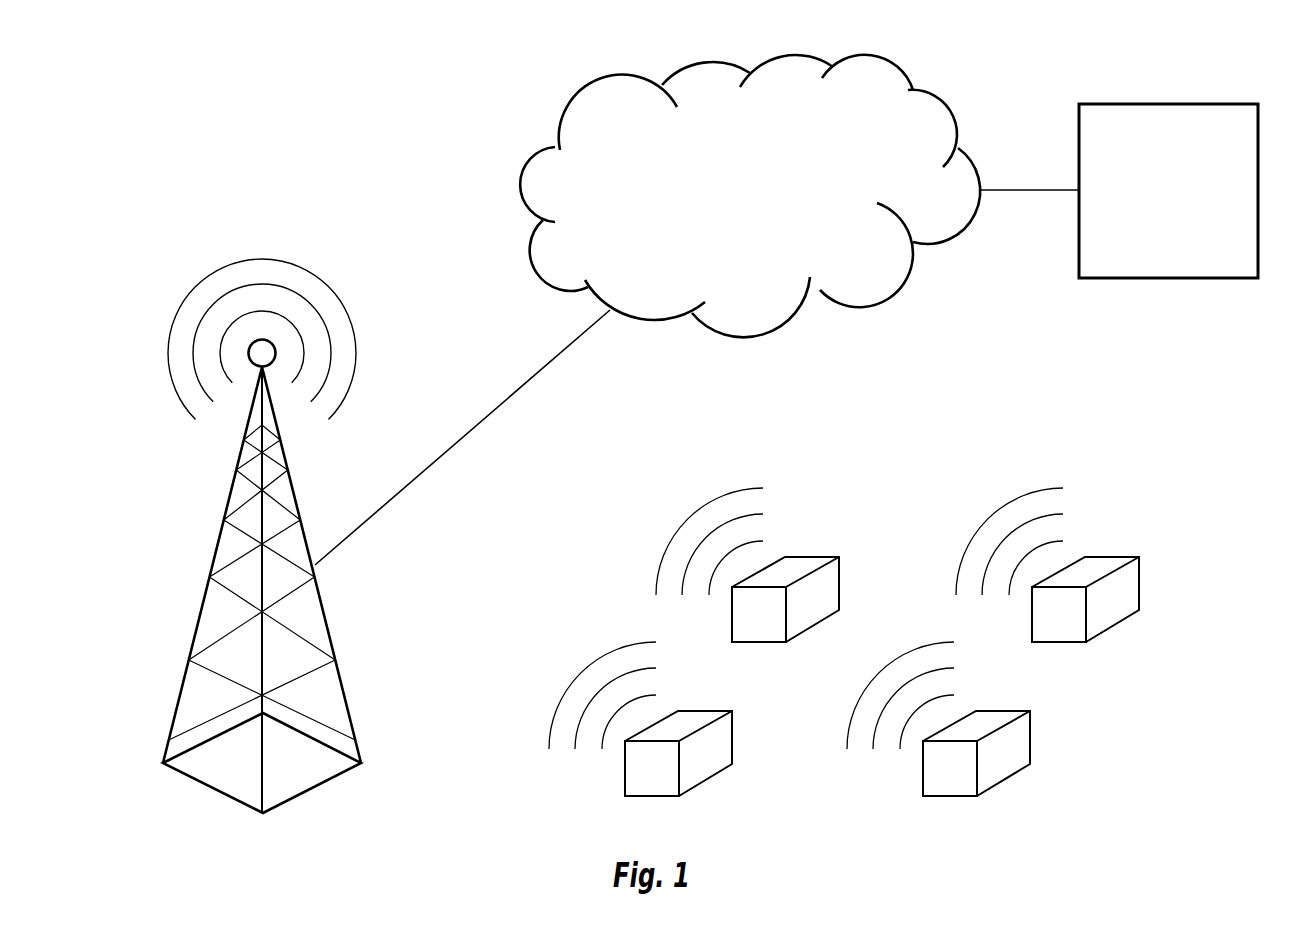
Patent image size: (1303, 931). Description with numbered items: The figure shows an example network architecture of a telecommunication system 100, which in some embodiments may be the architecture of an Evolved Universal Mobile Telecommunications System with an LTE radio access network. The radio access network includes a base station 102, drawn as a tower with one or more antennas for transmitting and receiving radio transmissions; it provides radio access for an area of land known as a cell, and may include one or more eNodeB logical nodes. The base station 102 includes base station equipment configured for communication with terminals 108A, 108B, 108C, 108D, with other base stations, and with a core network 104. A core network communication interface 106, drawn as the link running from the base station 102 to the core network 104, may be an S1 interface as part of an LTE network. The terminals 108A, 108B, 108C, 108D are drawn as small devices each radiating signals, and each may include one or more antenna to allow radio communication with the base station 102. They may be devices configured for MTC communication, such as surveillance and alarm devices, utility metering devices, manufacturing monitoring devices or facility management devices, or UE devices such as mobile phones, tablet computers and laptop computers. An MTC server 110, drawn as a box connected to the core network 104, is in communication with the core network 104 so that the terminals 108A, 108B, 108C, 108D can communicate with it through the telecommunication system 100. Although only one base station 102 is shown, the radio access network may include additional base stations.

The telecommunication system 100 is at (167, 145).
The base station 102 is at (212, 557).
The core network 104 is at (728, 220).
The core network communication interface 106 is at (493, 408).
The terminal 108A is at (813, 556).
The terminal 108B is at (1070, 565).
The terminal 108C is at (663, 719).
The terminal 108D is at (961, 719).
The MTC server 110 is at (1152, 236).